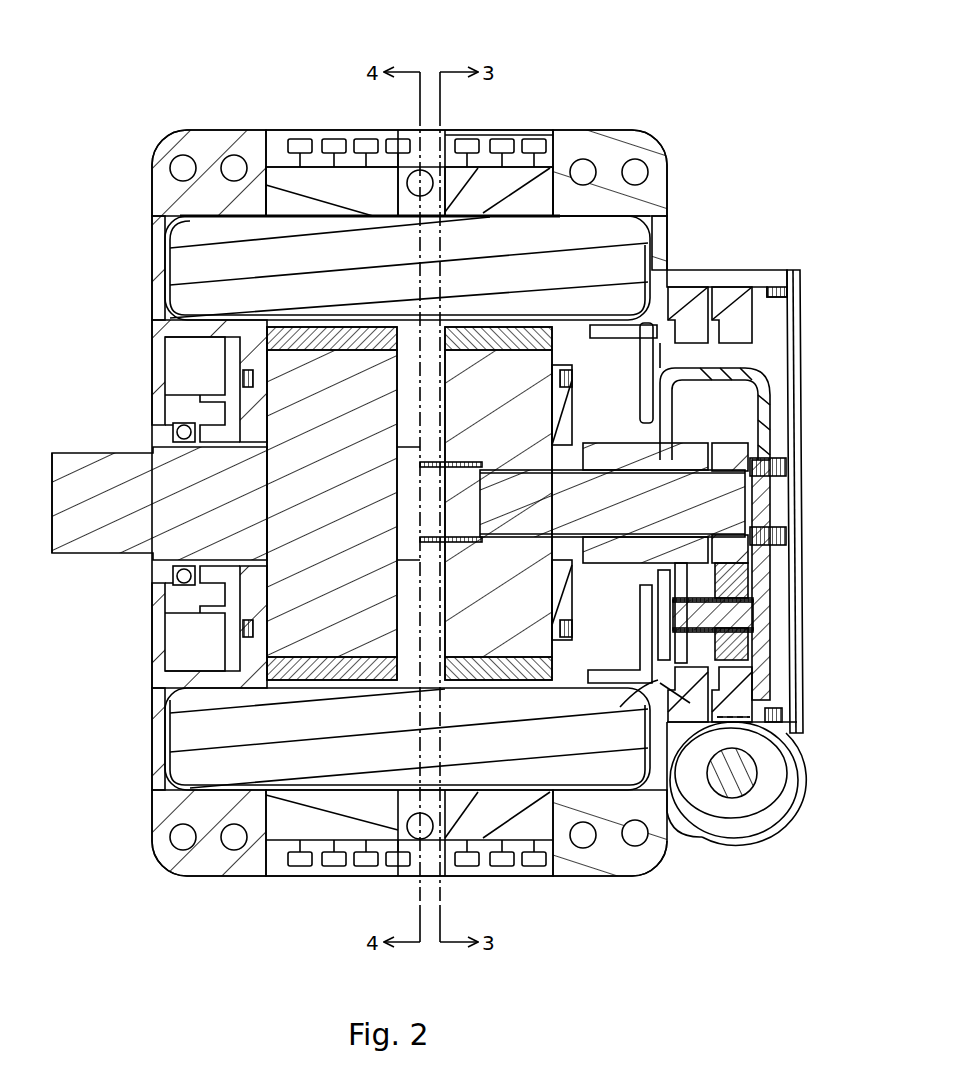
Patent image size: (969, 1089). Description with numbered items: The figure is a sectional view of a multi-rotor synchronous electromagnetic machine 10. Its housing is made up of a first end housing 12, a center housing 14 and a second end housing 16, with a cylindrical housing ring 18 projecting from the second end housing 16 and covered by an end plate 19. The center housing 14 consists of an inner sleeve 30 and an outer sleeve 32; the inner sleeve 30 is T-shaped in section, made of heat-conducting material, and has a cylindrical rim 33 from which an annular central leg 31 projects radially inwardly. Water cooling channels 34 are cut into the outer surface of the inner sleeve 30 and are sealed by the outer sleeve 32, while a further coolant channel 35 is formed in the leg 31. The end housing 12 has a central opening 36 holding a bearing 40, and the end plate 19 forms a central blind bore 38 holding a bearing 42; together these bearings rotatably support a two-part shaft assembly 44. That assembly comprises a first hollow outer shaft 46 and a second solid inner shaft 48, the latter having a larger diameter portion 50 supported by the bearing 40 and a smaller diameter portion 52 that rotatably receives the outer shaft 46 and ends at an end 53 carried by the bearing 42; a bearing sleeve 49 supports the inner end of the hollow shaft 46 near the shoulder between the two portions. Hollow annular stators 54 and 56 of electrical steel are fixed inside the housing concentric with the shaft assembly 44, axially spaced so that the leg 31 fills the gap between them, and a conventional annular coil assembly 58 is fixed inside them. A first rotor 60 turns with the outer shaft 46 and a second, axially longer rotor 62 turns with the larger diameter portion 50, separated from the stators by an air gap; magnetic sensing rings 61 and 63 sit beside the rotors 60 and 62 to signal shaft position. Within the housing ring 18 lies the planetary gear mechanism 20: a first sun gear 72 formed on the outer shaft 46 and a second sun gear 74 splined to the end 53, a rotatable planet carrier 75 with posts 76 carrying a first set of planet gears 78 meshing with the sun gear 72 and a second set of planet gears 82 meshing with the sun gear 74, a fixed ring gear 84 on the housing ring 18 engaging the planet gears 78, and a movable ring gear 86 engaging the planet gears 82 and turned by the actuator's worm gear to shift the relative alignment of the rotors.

The multi-rotor synchronous electromagnetic machine 10 is at (158, 100).
The first end housing 12 is at (213, 140).
The center housing 14 is at (315, 128).
The second end housing 16 is at (633, 142).
The housing ring 18 is at (752, 275).
The end plate 19 is at (801, 298).
The planetary gear mechanism 20 is at (790, 720).
The inner sleeve 30 is at (548, 140).
The central leg 31 is at (455, 198).
The outer sleeve 32 is at (482, 136).
The cylindrical rim 33 is at (355, 170).
The water cooling channels 34 is at (374, 150).
The coolant channel 35 is at (417, 196).
The central opening 36 is at (170, 428).
The central blind bore 38 is at (778, 480).
The bearing 40 is at (205, 408).
The bearing 42 is at (780, 532).
The two-part shaft assembly 44 is at (77, 451).
The first hollow outer shaft 46 is at (617, 445).
The second solid inner shaft 48 is at (150, 557).
The bearing sleeve 49 is at (456, 470).
The larger diameter portion 50 is at (242, 510).
The smaller diameter portion 52 is at (623, 510).
The end 53 is at (769, 508).
The stator 54 is at (243, 236).
The stator 56 is at (566, 226).
The coil assembly 58 is at (184, 268).
The first rotor 60 is at (556, 660).
The magnetic sensing ring 61 is at (572, 632).
The second rotor 62 is at (257, 663).
The magnetic sensing ring 63 is at (248, 370).
The first sun gear 72 is at (687, 440).
The second sun gear 74 is at (727, 440).
The planet carrier 75 is at (748, 586).
The planet carrier posts 76 is at (766, 614).
The first set of planet gears 78 is at (640, 688).
The second set of planet gears 82 is at (762, 681).
The fixed ring gear 84 is at (683, 300).
The movable ring gear 86 is at (716, 300).